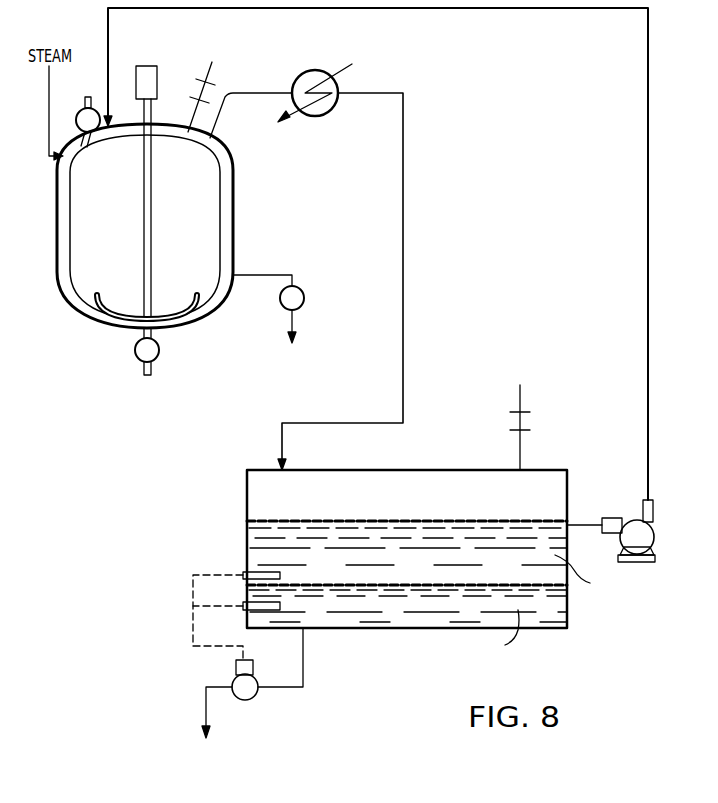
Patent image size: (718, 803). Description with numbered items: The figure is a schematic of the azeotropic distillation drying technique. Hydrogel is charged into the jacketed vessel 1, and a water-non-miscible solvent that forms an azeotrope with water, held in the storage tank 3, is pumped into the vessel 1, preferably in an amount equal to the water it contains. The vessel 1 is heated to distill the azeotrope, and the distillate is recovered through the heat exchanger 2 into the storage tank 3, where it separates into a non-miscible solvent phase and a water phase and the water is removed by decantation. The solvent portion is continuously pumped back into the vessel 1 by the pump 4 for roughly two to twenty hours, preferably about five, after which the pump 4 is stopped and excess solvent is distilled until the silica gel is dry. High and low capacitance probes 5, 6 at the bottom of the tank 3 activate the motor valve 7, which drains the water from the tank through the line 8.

The jacketed vessel 1 is at (233, 215).
The heat exchanger 2 is at (330, 114).
The storage tank 3 is at (388, 470).
The pump 4 is at (654, 535).
The high capacitance probe 5 is at (242, 573).
The low capacitance probe 6 is at (243, 604).
The motor valve 7 is at (255, 698).
The line 8 is at (206, 712).